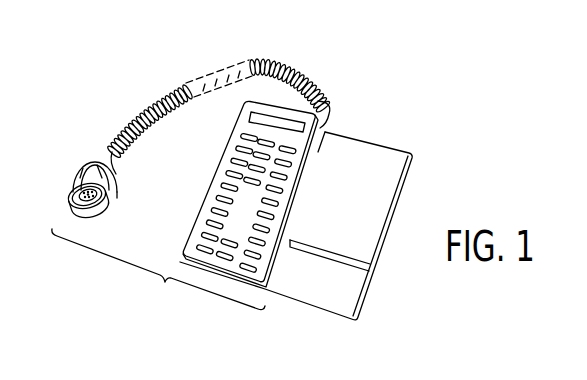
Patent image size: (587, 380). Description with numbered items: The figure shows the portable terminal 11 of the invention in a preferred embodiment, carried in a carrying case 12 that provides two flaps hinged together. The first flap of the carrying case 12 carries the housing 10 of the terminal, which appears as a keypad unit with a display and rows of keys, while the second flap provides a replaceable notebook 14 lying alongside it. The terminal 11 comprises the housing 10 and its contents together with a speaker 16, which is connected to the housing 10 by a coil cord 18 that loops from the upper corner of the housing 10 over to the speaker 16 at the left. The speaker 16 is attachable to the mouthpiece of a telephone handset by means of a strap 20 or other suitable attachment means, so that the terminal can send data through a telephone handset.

The telephone handset keypad unit 10 is at (200, 213).
The telephone 11 is at (158, 273).
The base 12 is at (274, 300).
The pad 14 is at (363, 200).
The earpiece 16 is at (68, 209).
The coiled cord 18 is at (232, 62).
The headband hoop 20 is at (88, 162).